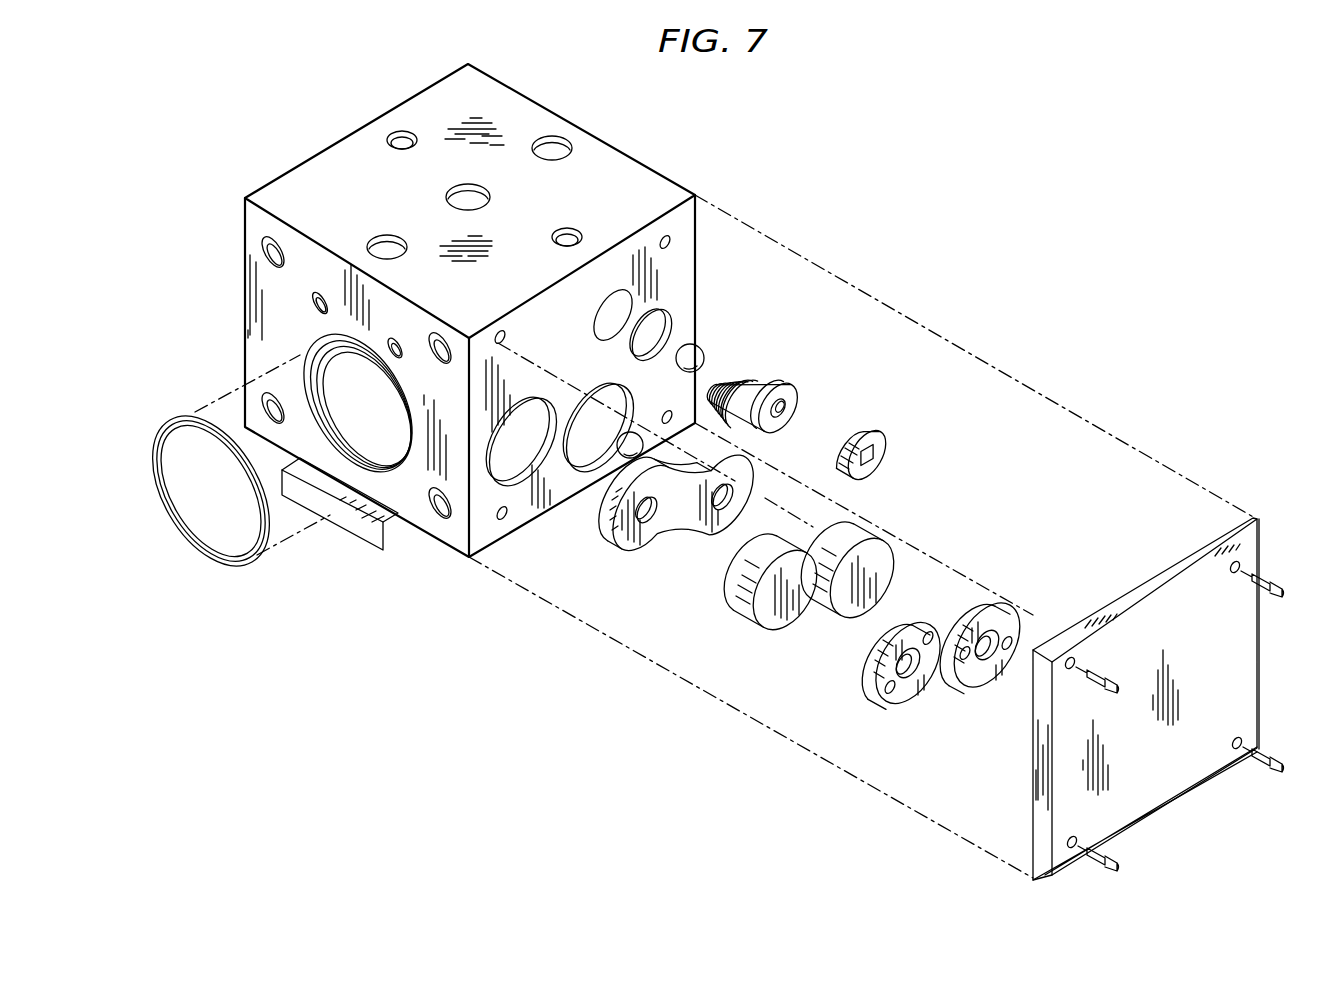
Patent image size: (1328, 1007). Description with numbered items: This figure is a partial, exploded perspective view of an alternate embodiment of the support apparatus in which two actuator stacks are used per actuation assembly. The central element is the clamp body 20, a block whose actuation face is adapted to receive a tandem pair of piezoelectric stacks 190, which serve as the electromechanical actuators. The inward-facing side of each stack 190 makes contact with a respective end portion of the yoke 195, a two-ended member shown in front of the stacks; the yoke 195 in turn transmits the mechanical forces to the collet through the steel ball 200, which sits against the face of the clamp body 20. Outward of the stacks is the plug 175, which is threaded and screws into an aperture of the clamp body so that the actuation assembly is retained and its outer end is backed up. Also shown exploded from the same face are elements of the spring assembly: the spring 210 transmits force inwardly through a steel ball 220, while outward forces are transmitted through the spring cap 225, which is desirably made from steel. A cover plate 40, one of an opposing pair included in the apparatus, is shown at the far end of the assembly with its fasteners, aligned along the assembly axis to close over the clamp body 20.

The clamp body 20 is at (652, 170).
The cover plate 40 is at (1258, 541).
The plug 175 is at (873, 693).
The piezoelectric stack 190 is at (873, 528).
The yoke 195 is at (607, 543).
The steel ball 200 is at (620, 455).
The spring 210 is at (798, 395).
The steel ball 220 is at (702, 352).
The spring cap 225 is at (887, 447).